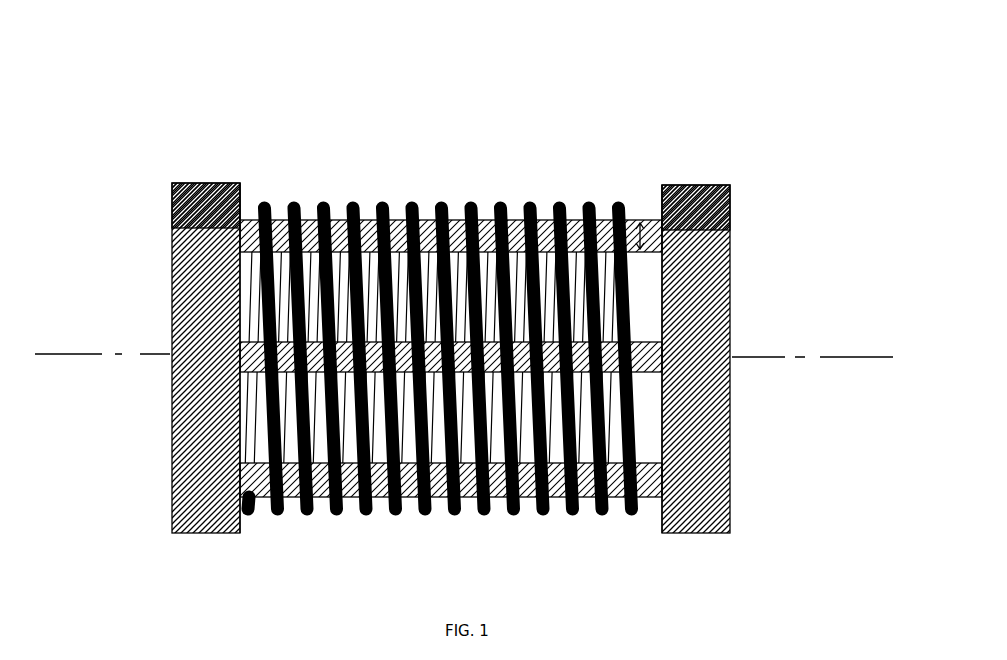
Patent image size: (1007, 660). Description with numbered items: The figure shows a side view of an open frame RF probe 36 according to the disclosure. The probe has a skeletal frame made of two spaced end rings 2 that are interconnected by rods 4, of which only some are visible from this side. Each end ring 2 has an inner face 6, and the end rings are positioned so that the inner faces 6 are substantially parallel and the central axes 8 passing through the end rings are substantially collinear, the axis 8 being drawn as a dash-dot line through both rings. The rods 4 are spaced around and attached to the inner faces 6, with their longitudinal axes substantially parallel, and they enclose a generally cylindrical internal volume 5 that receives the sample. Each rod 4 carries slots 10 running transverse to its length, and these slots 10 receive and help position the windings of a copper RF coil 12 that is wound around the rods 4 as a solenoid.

The RF probe 36 is at (488, 91).
The end ring 2 is at (198, 316).
The rod 4 is at (310, 206).
The internal volume 5 is at (659, 262).
The inner face 6 is at (241, 198).
The central axis 8 is at (66, 358).
The slot 10 is at (637, 287).
The RF coil 12 is at (443, 206).